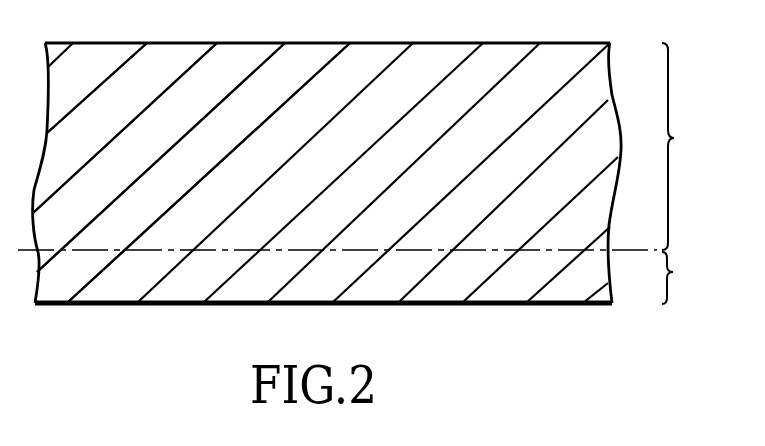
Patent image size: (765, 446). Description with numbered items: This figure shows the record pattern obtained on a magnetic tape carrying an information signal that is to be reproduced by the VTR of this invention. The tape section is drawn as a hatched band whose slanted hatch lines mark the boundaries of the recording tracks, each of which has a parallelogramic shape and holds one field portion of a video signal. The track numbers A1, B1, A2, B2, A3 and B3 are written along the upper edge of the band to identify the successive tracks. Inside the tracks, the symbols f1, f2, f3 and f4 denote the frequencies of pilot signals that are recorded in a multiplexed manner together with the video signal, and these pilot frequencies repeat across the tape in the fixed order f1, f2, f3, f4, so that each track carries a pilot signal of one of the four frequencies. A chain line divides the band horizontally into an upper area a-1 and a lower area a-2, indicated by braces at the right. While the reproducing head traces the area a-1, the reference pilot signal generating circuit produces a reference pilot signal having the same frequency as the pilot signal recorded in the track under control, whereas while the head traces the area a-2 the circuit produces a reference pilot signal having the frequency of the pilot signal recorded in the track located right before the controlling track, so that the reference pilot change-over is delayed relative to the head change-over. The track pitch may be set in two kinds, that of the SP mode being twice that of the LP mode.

The track number A1 is at (183, 139).
The track number B1 is at (230, 154).
The track number A2 is at (300, 154).
The track number B2 is at (365, 154).
The track number A3 is at (427, 154).
The track number B3 is at (482, 154).
The pilot signal frequency f1 is at (244, 157).
The pilot signal frequency f2 is at (287, 173).
The pilot signal frequency f3 is at (309, 122).
The pilot signal frequency f4 is at (215, 128).
The area a-1 is at (690, 146).
The area a-2 is at (690, 278).